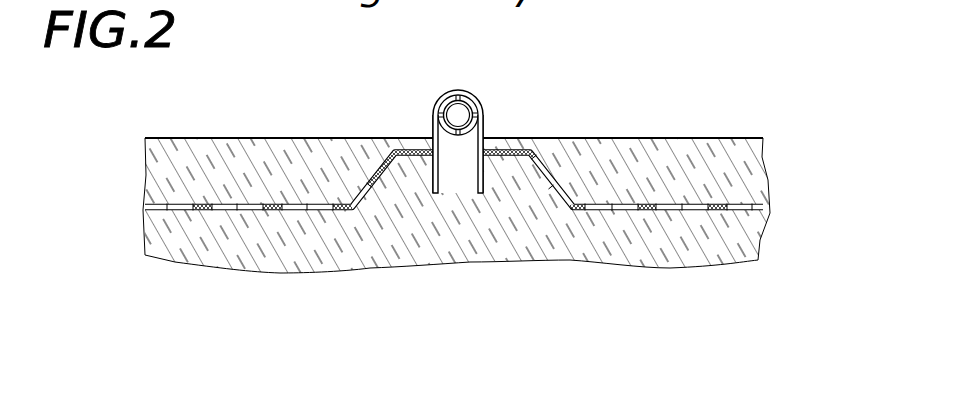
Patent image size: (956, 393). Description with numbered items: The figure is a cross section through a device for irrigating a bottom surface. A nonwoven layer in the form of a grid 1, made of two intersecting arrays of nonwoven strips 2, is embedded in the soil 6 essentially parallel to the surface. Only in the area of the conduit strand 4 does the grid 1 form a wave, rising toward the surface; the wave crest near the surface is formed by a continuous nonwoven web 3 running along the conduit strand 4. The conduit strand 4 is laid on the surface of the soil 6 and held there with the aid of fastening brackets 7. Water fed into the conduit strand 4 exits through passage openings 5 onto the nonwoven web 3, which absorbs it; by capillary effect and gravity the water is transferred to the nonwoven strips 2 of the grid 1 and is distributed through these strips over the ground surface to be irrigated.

The grid 1 is at (632, 199).
The nonwoven strips 2 is at (305, 201).
The nonwoven web 3 is at (497, 158).
The conduit strand 4 is at (468, 102).
The passage openings 5 is at (437, 108).
The soil 6 is at (348, 238).
The fastening brackets 7 is at (486, 127).